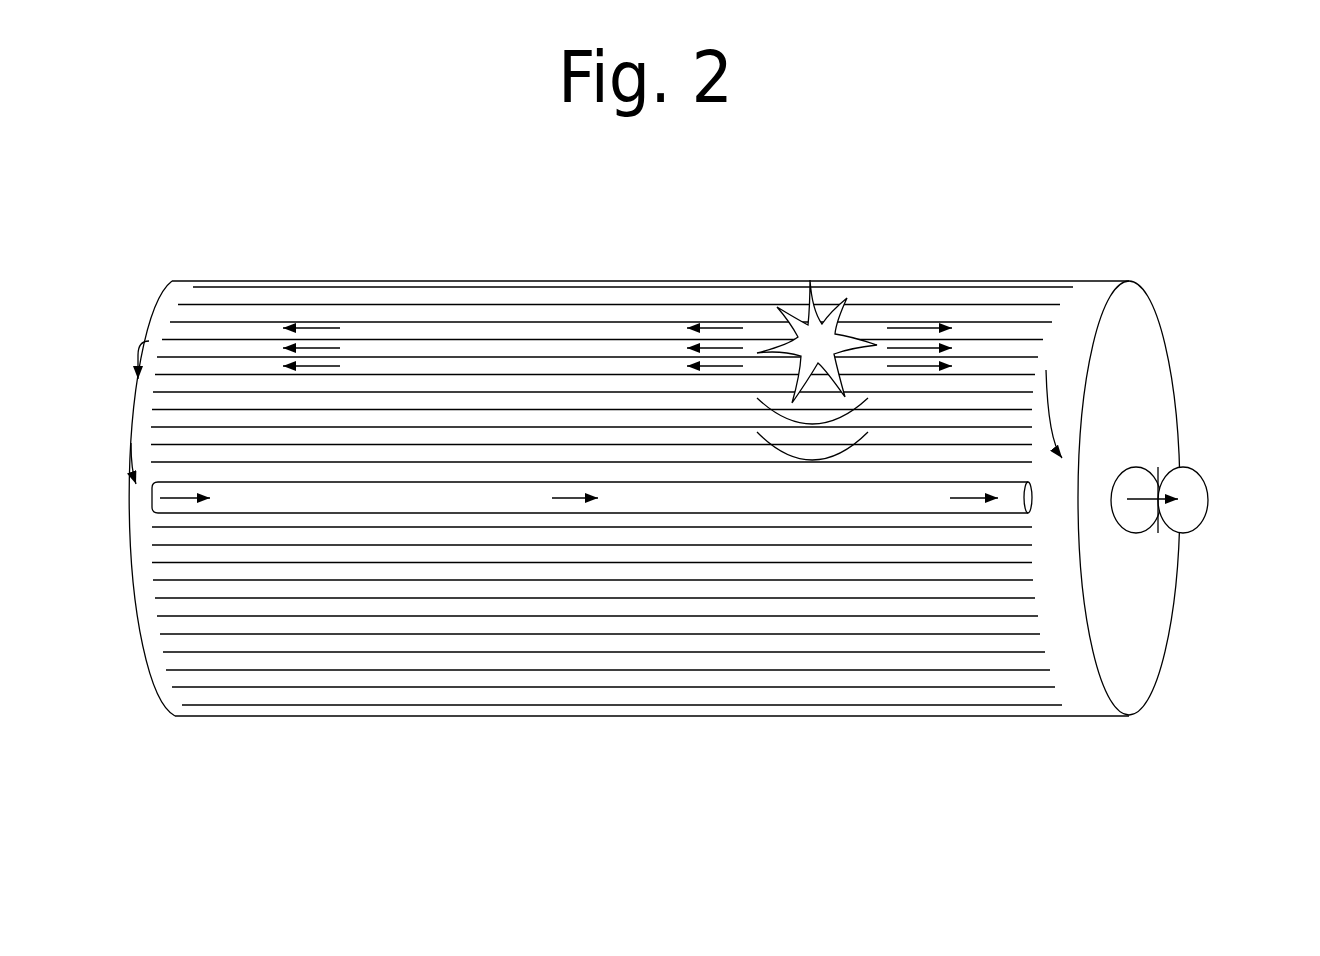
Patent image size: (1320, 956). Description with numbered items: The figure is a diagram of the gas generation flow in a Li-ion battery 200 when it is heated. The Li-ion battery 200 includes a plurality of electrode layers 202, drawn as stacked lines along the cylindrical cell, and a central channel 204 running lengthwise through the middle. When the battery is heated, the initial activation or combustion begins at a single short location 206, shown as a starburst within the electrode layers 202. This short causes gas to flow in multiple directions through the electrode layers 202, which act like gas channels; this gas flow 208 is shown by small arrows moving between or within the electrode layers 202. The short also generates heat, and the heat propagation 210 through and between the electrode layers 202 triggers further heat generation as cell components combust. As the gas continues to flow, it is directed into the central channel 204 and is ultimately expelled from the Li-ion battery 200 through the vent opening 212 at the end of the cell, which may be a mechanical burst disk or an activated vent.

The Li-ion battery 200 is at (1161, 160).
The electrode layers 202 is at (220, 698).
The central channel 204 is at (683, 523).
The short location 206 is at (822, 280).
The gas flow 208 is at (356, 318).
The heat propagation 210 is at (879, 382).
The vent opening 212 is at (1160, 555).